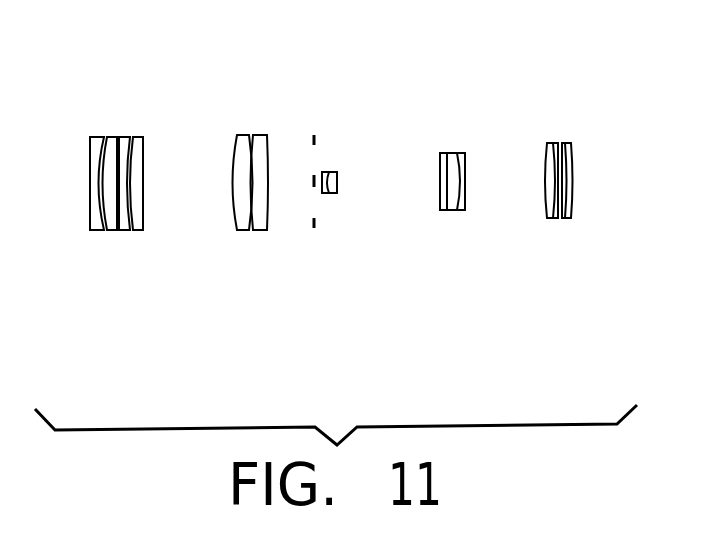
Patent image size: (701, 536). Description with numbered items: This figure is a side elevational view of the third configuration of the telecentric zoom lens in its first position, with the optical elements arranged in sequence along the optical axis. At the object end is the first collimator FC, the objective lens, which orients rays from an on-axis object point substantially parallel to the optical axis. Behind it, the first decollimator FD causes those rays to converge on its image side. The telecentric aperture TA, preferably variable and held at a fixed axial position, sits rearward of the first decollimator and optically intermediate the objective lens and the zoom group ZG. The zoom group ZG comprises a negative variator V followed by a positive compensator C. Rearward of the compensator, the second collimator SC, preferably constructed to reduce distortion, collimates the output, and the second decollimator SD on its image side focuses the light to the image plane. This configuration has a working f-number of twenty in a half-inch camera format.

The first collimator FC is at (147, 275).
The first decollimator FD is at (280, 98).
The telecentric aperture TA is at (315, 130).
The variator V is at (331, 197).
The compensator C is at (450, 143).
The second decollimator SD is at (577, 133).
The second collimator SC is at (563, 228).
The zoom group ZG is at (483, 307).